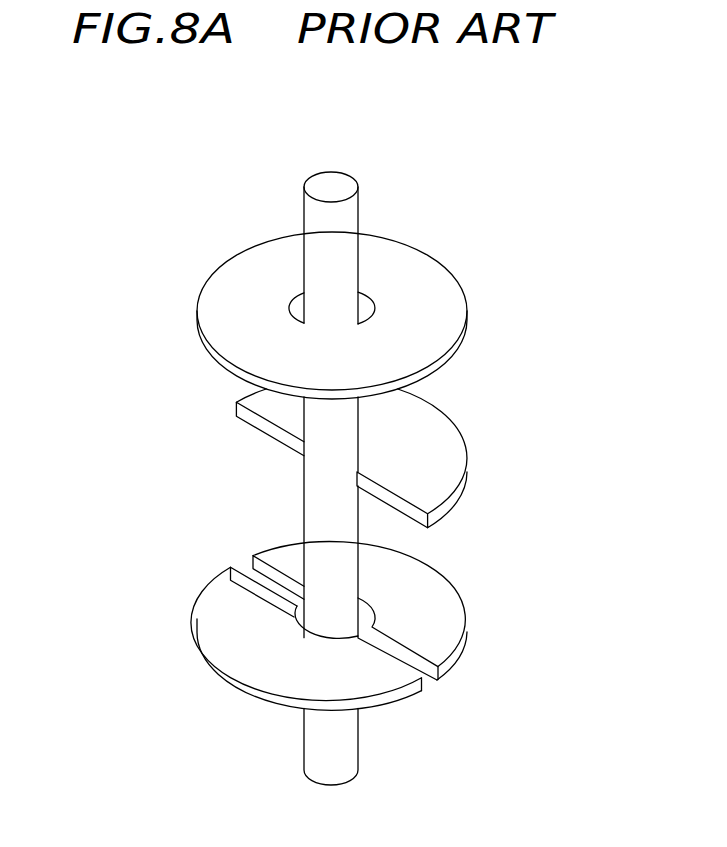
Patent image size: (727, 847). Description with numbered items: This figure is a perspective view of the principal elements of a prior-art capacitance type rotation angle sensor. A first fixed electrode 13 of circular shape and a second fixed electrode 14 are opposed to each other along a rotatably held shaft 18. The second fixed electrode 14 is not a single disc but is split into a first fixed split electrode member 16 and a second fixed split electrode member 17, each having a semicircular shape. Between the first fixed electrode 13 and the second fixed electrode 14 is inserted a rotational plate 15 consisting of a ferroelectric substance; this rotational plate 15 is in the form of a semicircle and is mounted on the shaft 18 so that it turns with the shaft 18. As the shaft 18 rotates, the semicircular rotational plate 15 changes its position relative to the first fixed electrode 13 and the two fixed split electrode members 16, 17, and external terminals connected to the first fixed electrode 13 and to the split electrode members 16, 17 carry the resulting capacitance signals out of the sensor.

The first fixed electrode 13 is at (417, 267).
The second fixed electrode 14 is at (324, 624).
The rotational plate 15 is at (444, 416).
The first fixed split electrode member 16 is at (200, 652).
The second fixed split electrode member 17 is at (465, 618).
The shaft 18 is at (361, 206).